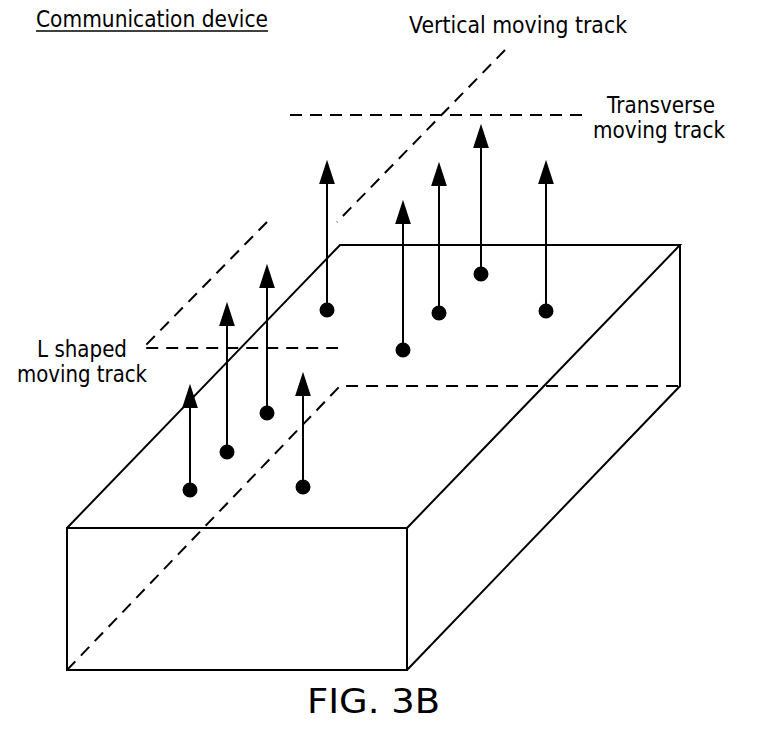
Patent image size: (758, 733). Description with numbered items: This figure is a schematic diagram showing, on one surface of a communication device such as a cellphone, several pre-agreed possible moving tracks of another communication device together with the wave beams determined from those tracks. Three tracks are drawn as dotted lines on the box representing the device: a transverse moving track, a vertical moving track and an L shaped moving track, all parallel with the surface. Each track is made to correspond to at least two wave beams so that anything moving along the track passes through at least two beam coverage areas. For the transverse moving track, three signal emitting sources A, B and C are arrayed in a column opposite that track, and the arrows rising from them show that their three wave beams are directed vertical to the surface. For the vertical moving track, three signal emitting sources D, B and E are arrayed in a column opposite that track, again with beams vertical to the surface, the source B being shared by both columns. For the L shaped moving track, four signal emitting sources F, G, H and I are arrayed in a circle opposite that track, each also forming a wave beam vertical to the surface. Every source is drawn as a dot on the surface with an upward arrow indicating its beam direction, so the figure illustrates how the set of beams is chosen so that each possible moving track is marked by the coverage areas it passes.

The signal emitting source A is at (326, 255).
The signal emitting source B is at (438, 256).
The signal emitting source C is at (545, 252).
The signal emitting source D is at (474, 214).
The signal emitting source E is at (403, 294).
The signal emitting source F is at (262, 354).
The signal emitting source G is at (227, 395).
The signal emitting source H is at (190, 455).
The signal emitting source I is at (299, 443).